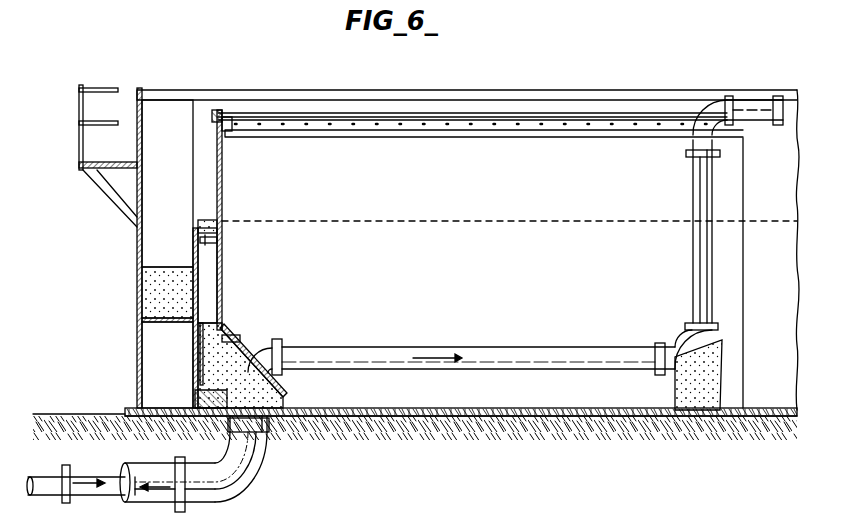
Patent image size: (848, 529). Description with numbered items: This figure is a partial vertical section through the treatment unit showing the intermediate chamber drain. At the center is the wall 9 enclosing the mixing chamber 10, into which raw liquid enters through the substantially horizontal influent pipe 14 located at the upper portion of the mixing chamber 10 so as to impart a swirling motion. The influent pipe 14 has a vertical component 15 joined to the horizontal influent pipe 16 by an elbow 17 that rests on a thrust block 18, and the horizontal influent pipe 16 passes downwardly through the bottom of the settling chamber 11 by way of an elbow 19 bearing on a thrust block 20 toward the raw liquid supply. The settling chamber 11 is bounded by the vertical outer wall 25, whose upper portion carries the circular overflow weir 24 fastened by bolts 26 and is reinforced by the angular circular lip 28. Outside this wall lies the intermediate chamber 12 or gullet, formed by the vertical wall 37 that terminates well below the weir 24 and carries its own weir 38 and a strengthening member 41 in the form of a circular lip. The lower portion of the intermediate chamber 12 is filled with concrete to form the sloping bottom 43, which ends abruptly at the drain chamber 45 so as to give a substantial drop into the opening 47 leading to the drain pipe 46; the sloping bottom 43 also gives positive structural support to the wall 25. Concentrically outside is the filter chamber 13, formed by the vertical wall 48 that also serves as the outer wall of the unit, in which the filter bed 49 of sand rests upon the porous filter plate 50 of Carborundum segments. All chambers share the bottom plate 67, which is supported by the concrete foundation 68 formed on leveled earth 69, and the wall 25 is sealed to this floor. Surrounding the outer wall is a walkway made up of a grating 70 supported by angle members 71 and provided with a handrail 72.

The wall 9 is at (752, 290).
The mixing chamber 10 is at (790, 100).
The settling chamber 11 is at (509, 200).
The intermediate chamber 12 is at (210, 273).
The filter chamber 13 is at (162, 235).
The influent pipe 14 is at (745, 108).
The vertical component 15 is at (693, 266).
The horizontal influent pipe 16 is at (530, 350).
The elbow 17 is at (690, 345).
The thrust block 18 is at (680, 392).
The elbow 19 is at (262, 352).
The thrust block 20 is at (242, 348).
The overflow weir 24 is at (212, 118).
The vertical outer wall 25 is at (217, 160).
The bolts 26 is at (222, 124).
The circular lip 28 is at (290, 137).
The vertical wall 37 is at (194, 250).
The weir 38 is at (203, 222).
The strengthening member 41 is at (222, 242).
The sloping bottom 43 is at (205, 325).
The drain chamber 45 is at (205, 360).
The drain pipe 46 is at (250, 472).
The opening 47 is at (272, 428).
The vertical wall 48 is at (137, 246).
The filter bed 49 is at (150, 290).
The porous filter plate 50 is at (168, 320).
The bottom plate 67 is at (432, 403).
The concrete foundation 68 is at (540, 410).
The leveled earth 69 is at (70, 413).
The grating 70 is at (128, 162).
The angle members 71 is at (112, 197).
The handrail 72 is at (79, 114).